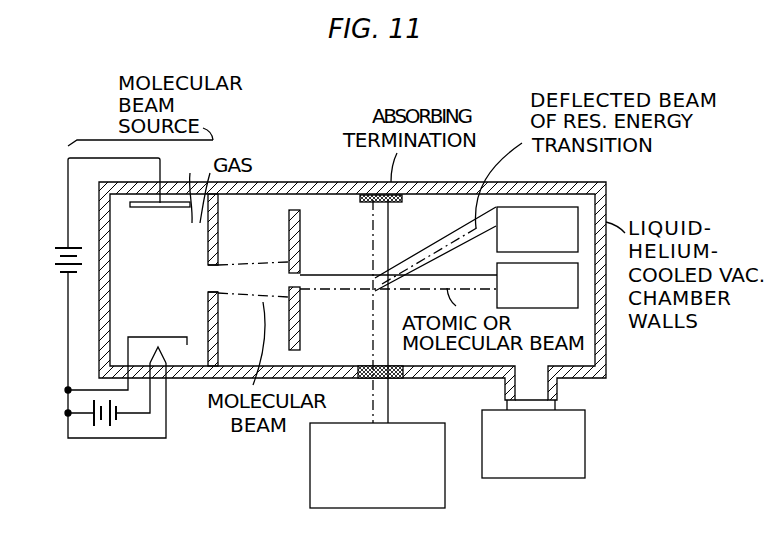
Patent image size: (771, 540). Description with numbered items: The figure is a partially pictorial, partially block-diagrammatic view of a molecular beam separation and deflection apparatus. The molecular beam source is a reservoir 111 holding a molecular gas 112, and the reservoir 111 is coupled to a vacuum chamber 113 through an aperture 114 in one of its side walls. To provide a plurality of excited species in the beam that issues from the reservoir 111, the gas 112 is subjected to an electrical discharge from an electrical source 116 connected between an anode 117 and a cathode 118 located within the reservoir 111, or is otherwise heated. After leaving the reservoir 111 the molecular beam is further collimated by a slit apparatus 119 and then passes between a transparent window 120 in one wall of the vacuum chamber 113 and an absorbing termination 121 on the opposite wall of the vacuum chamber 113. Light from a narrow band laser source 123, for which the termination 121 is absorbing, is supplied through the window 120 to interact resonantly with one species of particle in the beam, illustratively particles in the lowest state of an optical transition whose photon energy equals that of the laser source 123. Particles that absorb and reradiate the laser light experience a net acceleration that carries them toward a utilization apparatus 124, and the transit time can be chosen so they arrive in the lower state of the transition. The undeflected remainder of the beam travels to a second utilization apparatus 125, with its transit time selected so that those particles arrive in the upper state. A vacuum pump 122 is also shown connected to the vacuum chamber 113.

The reservoir 111 is at (110, 271).
The molecular gas 112 is at (187, 187).
The vacuum chamber 113 is at (307, 182).
The aperture 114 is at (218, 277).
The electrical source 116 is at (48, 263).
The anode 117 is at (142, 208).
The cathode 118 is at (157, 333).
The slit apparatus 119 is at (299, 325).
The transparent window 120 is at (391, 380).
The absorbing termination 121 is at (393, 203).
The vacuum pump 122 is at (585, 455).
The narrow band laser source 123 is at (308, 483).
The utilization apparatus 124 is at (577, 216).
The second utilization apparatus 125 is at (577, 299).